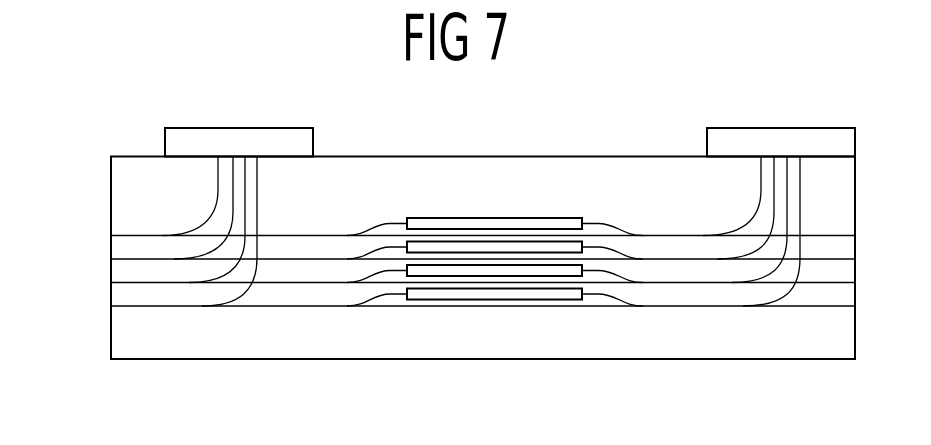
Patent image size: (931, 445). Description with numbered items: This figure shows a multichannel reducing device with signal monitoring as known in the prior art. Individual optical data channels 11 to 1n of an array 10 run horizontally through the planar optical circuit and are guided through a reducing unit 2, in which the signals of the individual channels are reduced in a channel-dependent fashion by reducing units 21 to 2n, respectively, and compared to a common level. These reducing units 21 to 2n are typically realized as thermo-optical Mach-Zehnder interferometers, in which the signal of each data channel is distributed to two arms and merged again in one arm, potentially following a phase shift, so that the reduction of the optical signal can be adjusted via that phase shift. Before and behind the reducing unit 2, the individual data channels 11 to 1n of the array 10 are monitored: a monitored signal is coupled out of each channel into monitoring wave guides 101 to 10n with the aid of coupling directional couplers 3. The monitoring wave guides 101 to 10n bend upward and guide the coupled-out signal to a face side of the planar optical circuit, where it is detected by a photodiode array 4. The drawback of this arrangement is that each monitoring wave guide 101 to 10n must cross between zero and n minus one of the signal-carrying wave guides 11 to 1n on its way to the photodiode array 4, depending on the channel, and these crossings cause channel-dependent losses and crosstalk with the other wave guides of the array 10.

The reducing unit 2 is at (486, 205).
The reducing unit 21 is at (530, 220).
The reducing unit 2n is at (483, 297).
The coupling directional coupler 3 is at (158, 220).
The monitoring wave guide 101 is at (210, 208).
The monitoring wave guide 10n is at (243, 290).
The photodiode array 4 is at (239, 143).
The array 10 is at (185, 320).
The optical data channel 11 is at (130, 236).
The optical data channel 1n is at (133, 307).